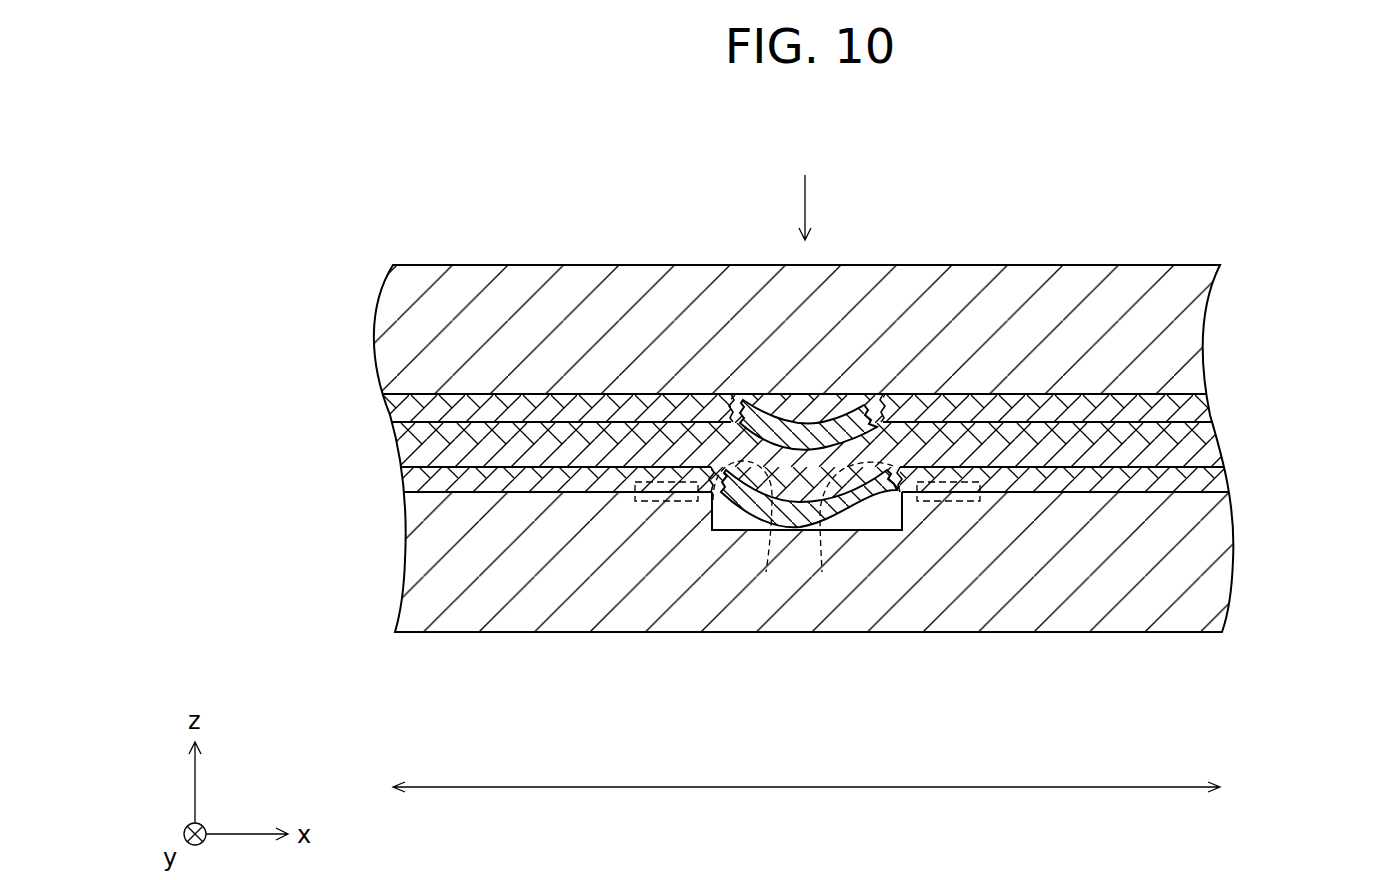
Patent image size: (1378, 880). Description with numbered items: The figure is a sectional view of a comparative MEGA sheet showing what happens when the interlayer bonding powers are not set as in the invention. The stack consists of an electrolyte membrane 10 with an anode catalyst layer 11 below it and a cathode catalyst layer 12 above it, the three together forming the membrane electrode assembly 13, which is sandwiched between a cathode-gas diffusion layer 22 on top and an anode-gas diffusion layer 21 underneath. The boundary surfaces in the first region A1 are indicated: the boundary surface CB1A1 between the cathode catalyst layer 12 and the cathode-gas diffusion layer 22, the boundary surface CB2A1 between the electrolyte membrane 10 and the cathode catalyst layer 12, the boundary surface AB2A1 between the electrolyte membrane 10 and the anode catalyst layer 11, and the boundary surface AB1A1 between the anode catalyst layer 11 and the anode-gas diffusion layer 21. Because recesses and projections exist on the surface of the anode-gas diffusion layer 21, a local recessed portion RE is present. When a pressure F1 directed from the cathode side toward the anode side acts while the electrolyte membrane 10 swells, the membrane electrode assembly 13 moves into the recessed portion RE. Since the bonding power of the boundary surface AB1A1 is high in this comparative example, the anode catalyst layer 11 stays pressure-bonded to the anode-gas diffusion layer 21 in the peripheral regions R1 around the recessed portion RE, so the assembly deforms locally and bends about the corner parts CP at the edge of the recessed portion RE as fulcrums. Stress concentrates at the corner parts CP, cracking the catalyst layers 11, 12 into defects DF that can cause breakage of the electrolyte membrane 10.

The cathode-gas diffusion layer 22 is at (1178, 333).
The anode-gas diffusion layer 21 is at (1200, 550).
The membrane electrode assembly (MEA) 13 is at (868, 457).
The cathode catalyst layer 12 is at (1185, 410).
The electrolyte membrane 10 is at (1195, 447).
The anode catalyst layer 11 is at (841, 479).
The boundary surface between cathode catalyst layer and cathode-gas diffusion layer CB1A1 is at (356, 386).
The boundary surface between electrolyte membrane and cathode catalyst layer in firs CB2A1 is at (360, 428).
The boundary surface between electrolyte membrane and anode catalyst layer in first AB2A1 is at (374, 472).
The boundary surface between anode catalyst layer and anode-gas diffusion layer in f AB1A1 is at (379, 492).
The defect DF is at (740, 396).
The recessed portion RE is at (860, 522).
The corner part CP is at (698, 511).
The peripheral region R1 is at (668, 503).
The pressure F1 is at (828, 207).
The first region A1 is at (806, 806).